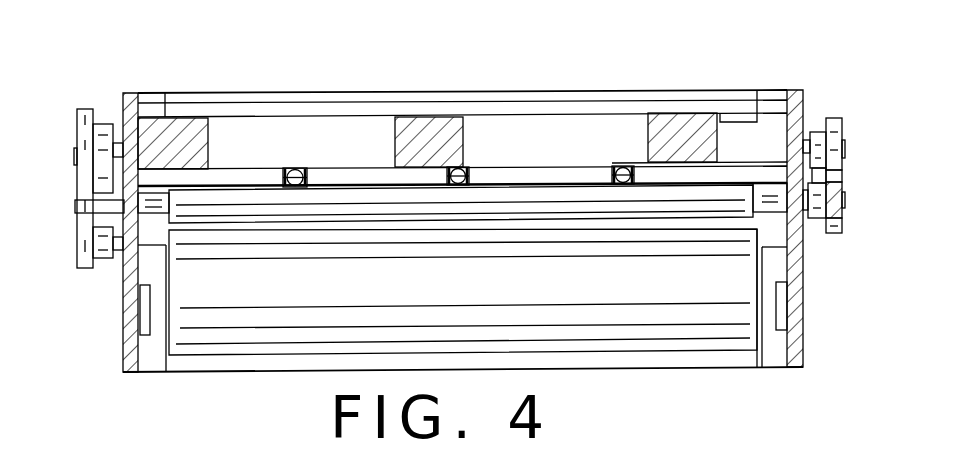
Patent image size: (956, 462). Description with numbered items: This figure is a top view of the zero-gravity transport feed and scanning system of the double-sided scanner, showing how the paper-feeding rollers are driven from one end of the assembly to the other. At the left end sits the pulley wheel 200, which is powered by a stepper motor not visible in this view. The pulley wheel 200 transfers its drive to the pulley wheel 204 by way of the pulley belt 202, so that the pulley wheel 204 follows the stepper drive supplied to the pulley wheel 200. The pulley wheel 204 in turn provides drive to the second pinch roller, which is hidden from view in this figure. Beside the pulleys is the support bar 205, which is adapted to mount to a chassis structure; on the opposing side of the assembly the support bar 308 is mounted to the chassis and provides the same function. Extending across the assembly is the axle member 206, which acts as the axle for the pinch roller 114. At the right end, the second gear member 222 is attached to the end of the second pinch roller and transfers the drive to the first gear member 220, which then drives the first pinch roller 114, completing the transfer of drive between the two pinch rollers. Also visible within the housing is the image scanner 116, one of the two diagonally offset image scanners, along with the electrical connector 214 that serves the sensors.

The pinch roller 114 is at (333, 200).
The image scanner 116 is at (598, 143).
The pulley wheel 200 is at (107, 260).
The pulley belt 202 is at (85, 175).
The pulley wheel 204 is at (107, 135).
The support bar 205 is at (118, 145).
The axle member 206 is at (75, 208).
The electrical connector 214 is at (743, 115).
The first gear member 220 is at (832, 233).
The second gear member 222 is at (832, 123).
The support bar 308 is at (812, 130).